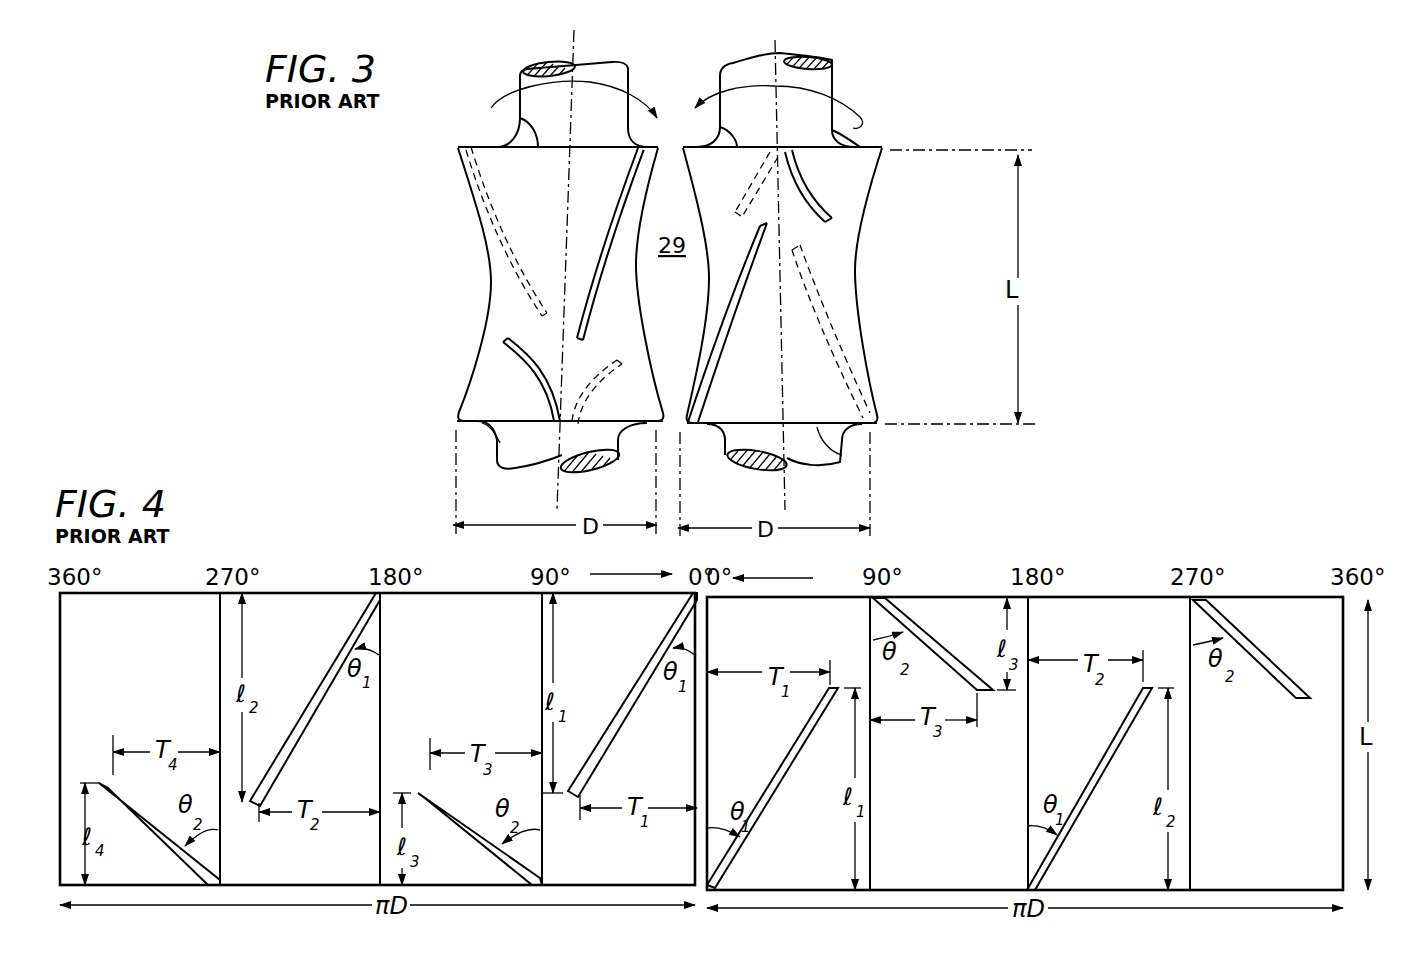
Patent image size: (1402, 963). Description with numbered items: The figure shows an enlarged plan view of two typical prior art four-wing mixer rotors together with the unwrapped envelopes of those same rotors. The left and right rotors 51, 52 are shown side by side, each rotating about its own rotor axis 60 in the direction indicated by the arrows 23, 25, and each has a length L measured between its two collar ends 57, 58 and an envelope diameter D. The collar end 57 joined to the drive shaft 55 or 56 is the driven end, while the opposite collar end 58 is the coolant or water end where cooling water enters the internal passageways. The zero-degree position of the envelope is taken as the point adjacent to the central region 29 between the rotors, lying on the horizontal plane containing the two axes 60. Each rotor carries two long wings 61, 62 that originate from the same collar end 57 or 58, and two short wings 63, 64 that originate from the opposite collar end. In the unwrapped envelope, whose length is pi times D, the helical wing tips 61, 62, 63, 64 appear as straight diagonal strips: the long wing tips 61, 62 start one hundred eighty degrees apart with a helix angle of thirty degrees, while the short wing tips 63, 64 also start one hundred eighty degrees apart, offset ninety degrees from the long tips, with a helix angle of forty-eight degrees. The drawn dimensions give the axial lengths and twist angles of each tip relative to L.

In FIG. 3, the direction of rotation of left rotor 23 is at (491, 108).
In FIG. 4, the direction of rotation of left rotor 23 is at (632, 574).
In FIG. 3, the direction of rotation of right rotor 25 is at (860, 117).
In FIG. 4, the direction of rotation of right rotor 25 is at (776, 578).
In FIG. 4, the central region 29 is at (697, 728).
In FIG. 3, the left rotor 51 is at (480, 322).
In FIG. 3, the right rotor 52 is at (885, 258).
In FIG. 3, the drive shaft 55 is at (520, 85).
In FIG. 3, the drive shaft 56 is at (833, 63).
In FIG. 3, the collar end (driven end) 57 is at (520, 118).
In FIG. 3, the collar end (coolant end) 58 is at (497, 440).
In FIG. 3, the rotor axis 60 is at (576, 55).
In FIG. 3, the long wing tip 61 is at (620, 282).
In FIG. 4, the long wing tip 61 is at (630, 690).
In FIG. 3, the long wing tip 62 is at (470, 207).
In FIG. 4, the long wing tip 62 is at (297, 742).
In FIG. 3, the short wing tip 63 is at (522, 369).
In FIG. 4, the short wing tip 63 is at (481, 852).
In FIG. 3, the short wing tip 64 is at (592, 362).
In FIG. 4, the short wing tip 64 is at (148, 832).